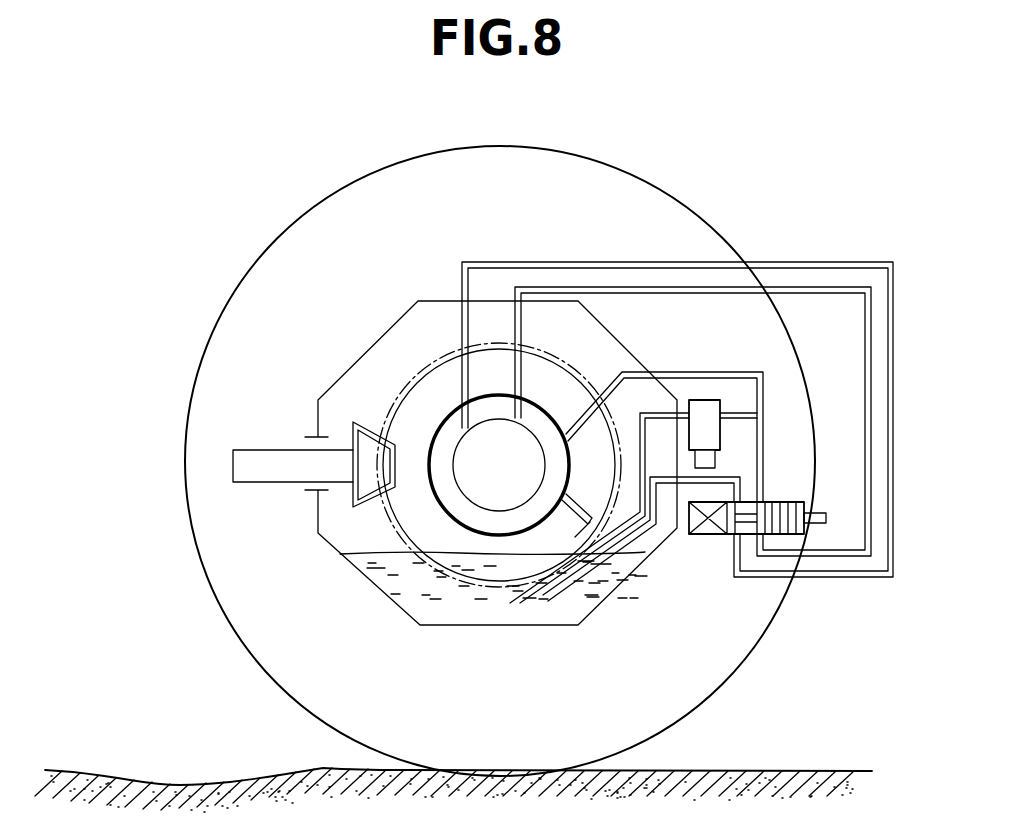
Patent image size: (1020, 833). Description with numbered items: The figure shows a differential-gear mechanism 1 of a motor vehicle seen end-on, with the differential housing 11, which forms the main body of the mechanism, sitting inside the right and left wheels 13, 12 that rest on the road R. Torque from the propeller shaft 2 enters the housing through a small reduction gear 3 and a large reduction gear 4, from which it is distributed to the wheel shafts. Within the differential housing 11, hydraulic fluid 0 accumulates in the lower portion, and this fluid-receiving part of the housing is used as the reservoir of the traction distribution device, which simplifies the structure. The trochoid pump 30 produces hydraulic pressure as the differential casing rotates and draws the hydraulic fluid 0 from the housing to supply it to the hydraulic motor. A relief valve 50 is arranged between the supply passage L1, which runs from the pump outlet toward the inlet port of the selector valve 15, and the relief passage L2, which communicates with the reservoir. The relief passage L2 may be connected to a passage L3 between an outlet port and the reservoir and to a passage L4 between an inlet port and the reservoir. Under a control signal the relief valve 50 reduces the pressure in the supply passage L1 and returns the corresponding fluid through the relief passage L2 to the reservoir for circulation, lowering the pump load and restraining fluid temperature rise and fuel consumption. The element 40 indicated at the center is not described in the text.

The differential-gear mechanism 1 is at (455, 453).
The differential housing 11 is at (425, 300).
The trochoid pump 30 is at (432, 410).
The rotor shaft bore 40 is at (441, 446).
The propeller shaft 2 is at (270, 460).
The small reduction gear 3 is at (353, 493).
The large reduction gear 4 is at (405, 517).
The hydraulic fluid 0 is at (433, 615).
The left wheel 12 is at (600, 162).
The right wheel 13 is at (500, 437).
The supply passage L1 is at (723, 373).
The relief passage L2 is at (660, 413).
The passage L3 is at (582, 513).
The passage L4 is at (653, 537).
The relief valve 50 is at (710, 435).
The selector valve 15 is at (703, 535).
The road R is at (779, 770).